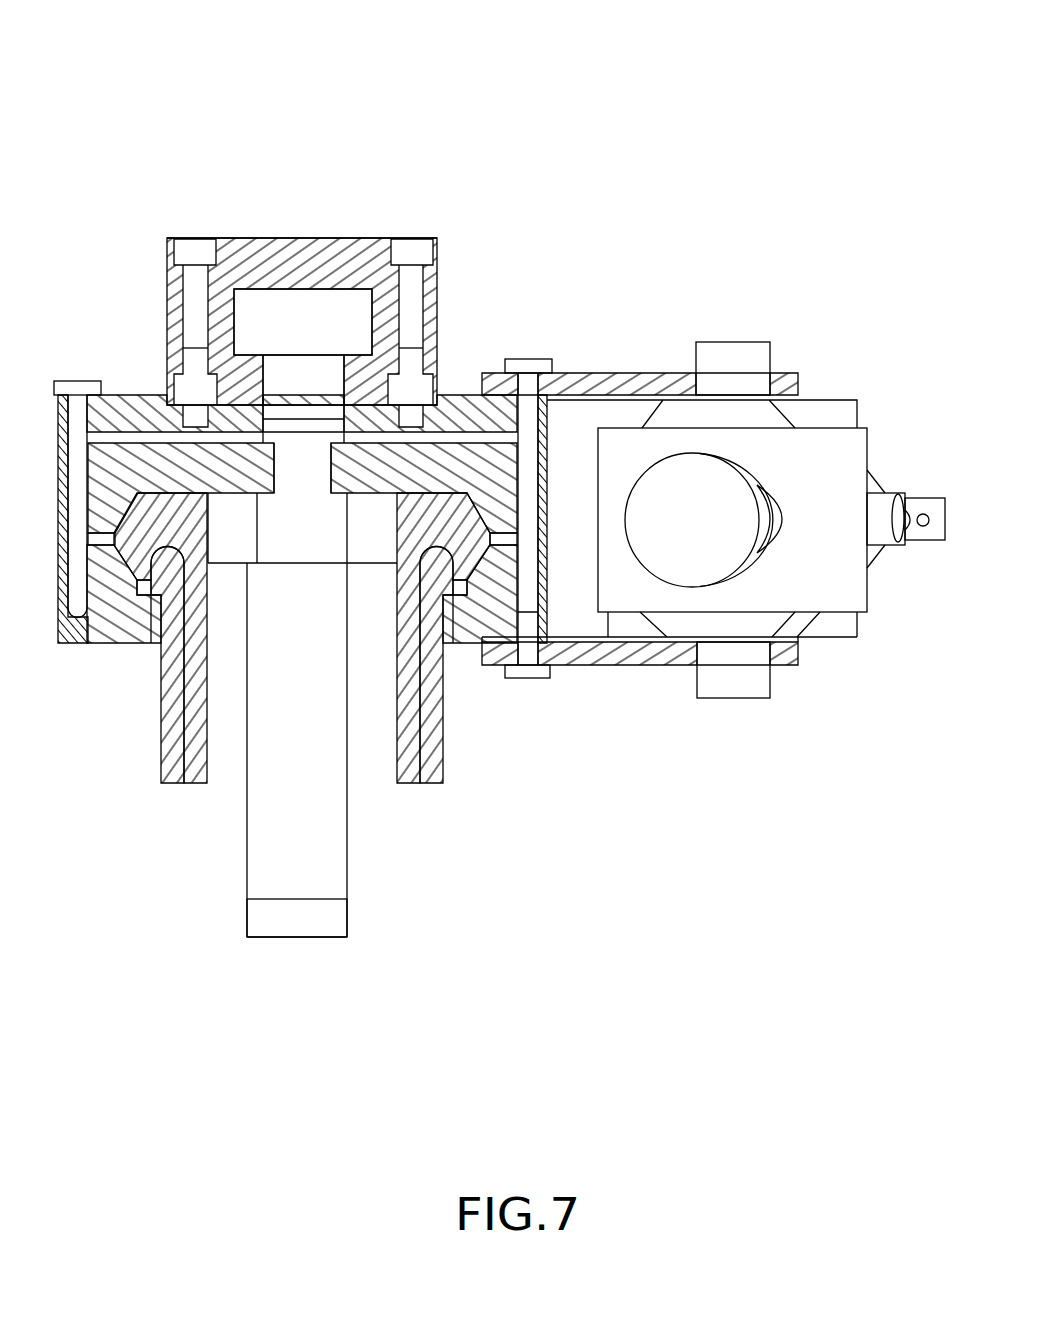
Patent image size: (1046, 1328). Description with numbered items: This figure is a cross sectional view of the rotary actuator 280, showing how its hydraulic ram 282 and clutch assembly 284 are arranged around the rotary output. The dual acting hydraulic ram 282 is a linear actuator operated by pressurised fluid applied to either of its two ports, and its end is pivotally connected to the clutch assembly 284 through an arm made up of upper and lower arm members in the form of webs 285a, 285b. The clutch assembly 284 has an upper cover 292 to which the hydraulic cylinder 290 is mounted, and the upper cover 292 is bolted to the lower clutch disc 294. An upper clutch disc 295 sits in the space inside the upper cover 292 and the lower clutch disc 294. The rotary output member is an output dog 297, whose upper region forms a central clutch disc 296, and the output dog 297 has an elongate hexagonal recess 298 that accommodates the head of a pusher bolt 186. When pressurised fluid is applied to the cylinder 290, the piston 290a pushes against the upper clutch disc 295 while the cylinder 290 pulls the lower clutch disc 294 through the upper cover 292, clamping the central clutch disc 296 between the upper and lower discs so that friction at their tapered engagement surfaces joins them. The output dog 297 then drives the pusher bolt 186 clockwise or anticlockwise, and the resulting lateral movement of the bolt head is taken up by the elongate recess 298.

The actuator 280 is at (522, 125).
The clutch assembly 284 is at (175, 192).
The hydraulic cylinder 290 is at (252, 238).
The piston 290a is at (301, 313).
The upper cover 292 is at (134, 395).
The upper clutch disc 295 is at (102, 438).
The lower clutch disc 294 is at (93, 626).
The central clutch disc 296 is at (138, 558).
The output dog 297 is at (193, 778).
The elongate hexagonal recess 298 is at (374, 776).
The pusher bolt 186 is at (293, 922).
The upper web 285a is at (615, 380).
The lower web 285b is at (588, 657).
The hydraulic ram 282 is at (822, 410).